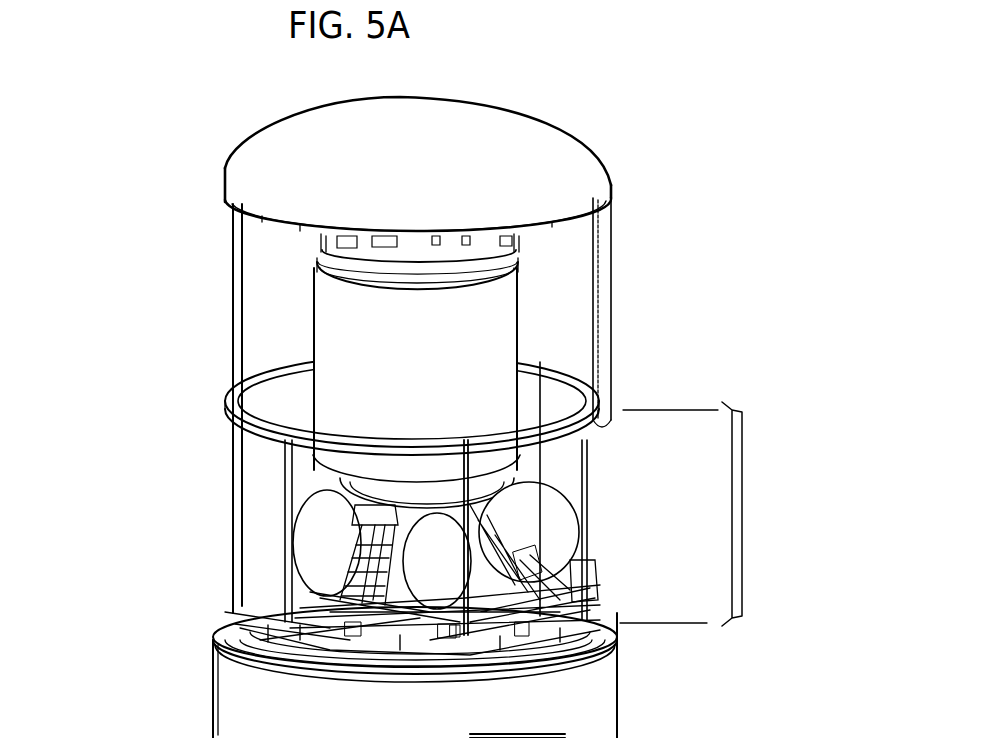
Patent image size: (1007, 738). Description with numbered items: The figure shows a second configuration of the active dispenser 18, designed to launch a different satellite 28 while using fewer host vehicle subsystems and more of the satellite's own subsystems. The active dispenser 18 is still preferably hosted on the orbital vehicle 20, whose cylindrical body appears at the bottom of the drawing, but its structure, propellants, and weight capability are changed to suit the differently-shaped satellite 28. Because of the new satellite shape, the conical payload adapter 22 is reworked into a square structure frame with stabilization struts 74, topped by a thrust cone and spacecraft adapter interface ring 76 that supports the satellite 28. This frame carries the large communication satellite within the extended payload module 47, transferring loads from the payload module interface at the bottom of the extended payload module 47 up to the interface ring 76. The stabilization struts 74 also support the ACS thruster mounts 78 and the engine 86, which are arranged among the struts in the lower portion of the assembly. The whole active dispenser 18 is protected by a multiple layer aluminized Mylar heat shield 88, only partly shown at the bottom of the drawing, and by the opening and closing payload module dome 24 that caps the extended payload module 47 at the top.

The active dispenser 18 is at (742, 506).
The K-1 orbital vehicle 20 is at (618, 682).
The conical payload adapter 22 is at (390, 653).
The opening and closing payload module dome 24 is at (452, 120).
The satellite 28 is at (497, 323).
The extended payload module 47 is at (610, 248).
The stabilization struts 74 is at (495, 513).
The thrust cone and spacecraft adapter interface ring 76 is at (330, 469).
The ACS thruster mounts 78 is at (510, 612).
The engine 86 is at (292, 612).
The multiple layer aluminized Mylar heat shield 88 is at (600, 731).